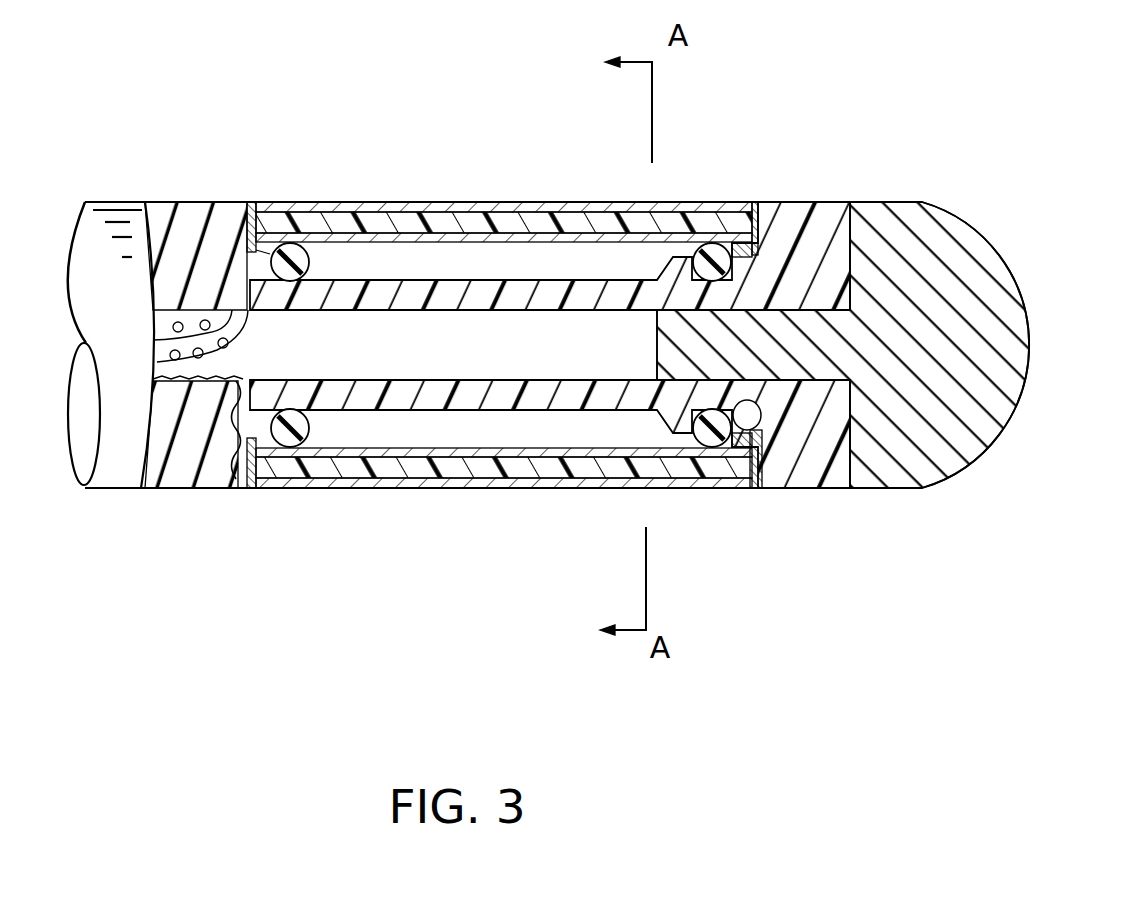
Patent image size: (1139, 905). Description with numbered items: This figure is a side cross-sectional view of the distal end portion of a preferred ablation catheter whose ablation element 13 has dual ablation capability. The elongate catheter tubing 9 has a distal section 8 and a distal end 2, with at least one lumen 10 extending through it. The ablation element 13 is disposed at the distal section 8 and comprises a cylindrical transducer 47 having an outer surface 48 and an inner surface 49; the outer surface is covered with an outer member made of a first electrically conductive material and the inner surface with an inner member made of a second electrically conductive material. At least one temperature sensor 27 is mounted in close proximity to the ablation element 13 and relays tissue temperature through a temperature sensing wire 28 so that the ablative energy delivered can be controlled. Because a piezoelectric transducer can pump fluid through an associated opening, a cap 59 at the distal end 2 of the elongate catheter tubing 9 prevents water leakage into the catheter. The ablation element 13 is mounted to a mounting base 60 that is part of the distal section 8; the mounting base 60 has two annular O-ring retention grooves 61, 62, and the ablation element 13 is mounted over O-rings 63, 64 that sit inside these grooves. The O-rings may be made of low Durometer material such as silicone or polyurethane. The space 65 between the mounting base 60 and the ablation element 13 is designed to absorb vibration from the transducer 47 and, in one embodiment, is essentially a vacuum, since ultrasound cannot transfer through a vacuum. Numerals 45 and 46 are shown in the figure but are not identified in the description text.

The distal end 2 is at (869, 181).
The distal section 8 is at (811, 494).
The elongate catheter tubing 9 is at (117, 191).
The lumen 10 is at (290, 340).
The ablation element 13 is at (372, 513).
The temperature sensor 27 is at (252, 497).
The temperature sensing wire 28 is at (232, 440).
The filler 45 is at (157, 323).
The adhesive layer 46 is at (187, 383).
The cylindrical transducer 47 is at (647, 202).
The outer surface 48 is at (532, 197).
The inner surface 49 is at (755, 202).
The cap 59 is at (996, 234).
The mounting base 60 is at (427, 272).
The O-ring retention groove 61 is at (340, 377).
The O-ring retention groove 62 is at (747, 445).
The O-ring 63 is at (272, 252).
The O-ring 64 is at (655, 490).
The space 65 is at (498, 435).